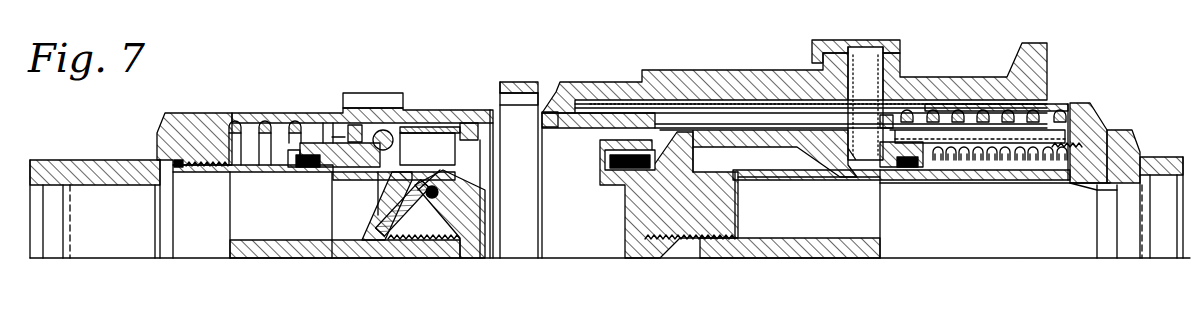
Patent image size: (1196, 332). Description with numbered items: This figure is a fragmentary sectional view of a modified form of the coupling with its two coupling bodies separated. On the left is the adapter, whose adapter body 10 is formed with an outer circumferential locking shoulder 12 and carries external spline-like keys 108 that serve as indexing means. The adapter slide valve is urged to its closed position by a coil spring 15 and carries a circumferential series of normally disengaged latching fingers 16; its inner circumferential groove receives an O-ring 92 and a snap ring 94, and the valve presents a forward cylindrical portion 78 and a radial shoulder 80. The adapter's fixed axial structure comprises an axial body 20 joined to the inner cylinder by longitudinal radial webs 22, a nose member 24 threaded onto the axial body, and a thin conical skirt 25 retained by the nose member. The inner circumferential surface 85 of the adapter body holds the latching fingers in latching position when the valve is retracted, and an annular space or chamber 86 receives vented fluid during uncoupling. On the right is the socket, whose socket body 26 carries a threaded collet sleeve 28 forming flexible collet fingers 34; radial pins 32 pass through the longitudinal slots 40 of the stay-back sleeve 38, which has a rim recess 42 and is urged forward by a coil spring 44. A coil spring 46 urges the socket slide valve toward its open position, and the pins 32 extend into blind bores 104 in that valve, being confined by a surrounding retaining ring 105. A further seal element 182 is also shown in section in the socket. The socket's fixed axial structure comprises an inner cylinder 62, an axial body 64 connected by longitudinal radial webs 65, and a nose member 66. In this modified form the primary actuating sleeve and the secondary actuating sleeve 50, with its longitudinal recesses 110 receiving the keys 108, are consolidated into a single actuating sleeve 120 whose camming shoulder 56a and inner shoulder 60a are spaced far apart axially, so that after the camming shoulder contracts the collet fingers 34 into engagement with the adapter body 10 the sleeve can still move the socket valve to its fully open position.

The adapter body 10 is at (241, 105).
The outer circumferential locking shoulder 12 is at (432, 110).
The coil spring 15 is at (282, 120).
The latching fingers 16 is at (450, 112).
The axial body 20 is at (345, 245).
The longitudinal radial webs 22 is at (240, 220).
The nose member 24 is at (464, 223).
The thin conical skirt 25 is at (396, 204).
The socket body 26 is at (1132, 127).
The collet sleeve 28 is at (1090, 104).
The radial pins 32 is at (880, 72).
The collet fingers 34 is at (552, 95).
The stay-back sleeve 38 is at (584, 130).
The longitudinal slots 40 is at (738, 138).
The rim recess 42 is at (540, 118).
The coil spring 44 is at (1058, 110).
The coil spring 46 is at (1030, 165).
The secondary actuating sleeve 50 is at (540, 92).
The camming shoulder 56a is at (578, 86).
The inner shoulder 60a is at (700, 100).
The inner cylinder 62 is at (924, 182).
The axial body 64 is at (805, 245).
The longitudinal radial webs 65 is at (872, 230).
The nose member 66 is at (660, 220).
The forward cylindrical portion 78 is at (490, 133).
The radial shoulder 80 is at (402, 150).
The inner circumferential surface 85 is at (410, 110).
The annular space or chamber 86 is at (488, 148).
The O-ring 92 is at (320, 168).
The snap ring 94 is at (300, 168).
The blind bores 104 is at (860, 165).
The retaining ring 105 is at (855, 40).
The spline-like keys 108 is at (370, 93).
The longitudinal recesses 110 is at (504, 82).
The actuating sleeve 120 is at (728, 70).
The seal 182 is at (660, 158).